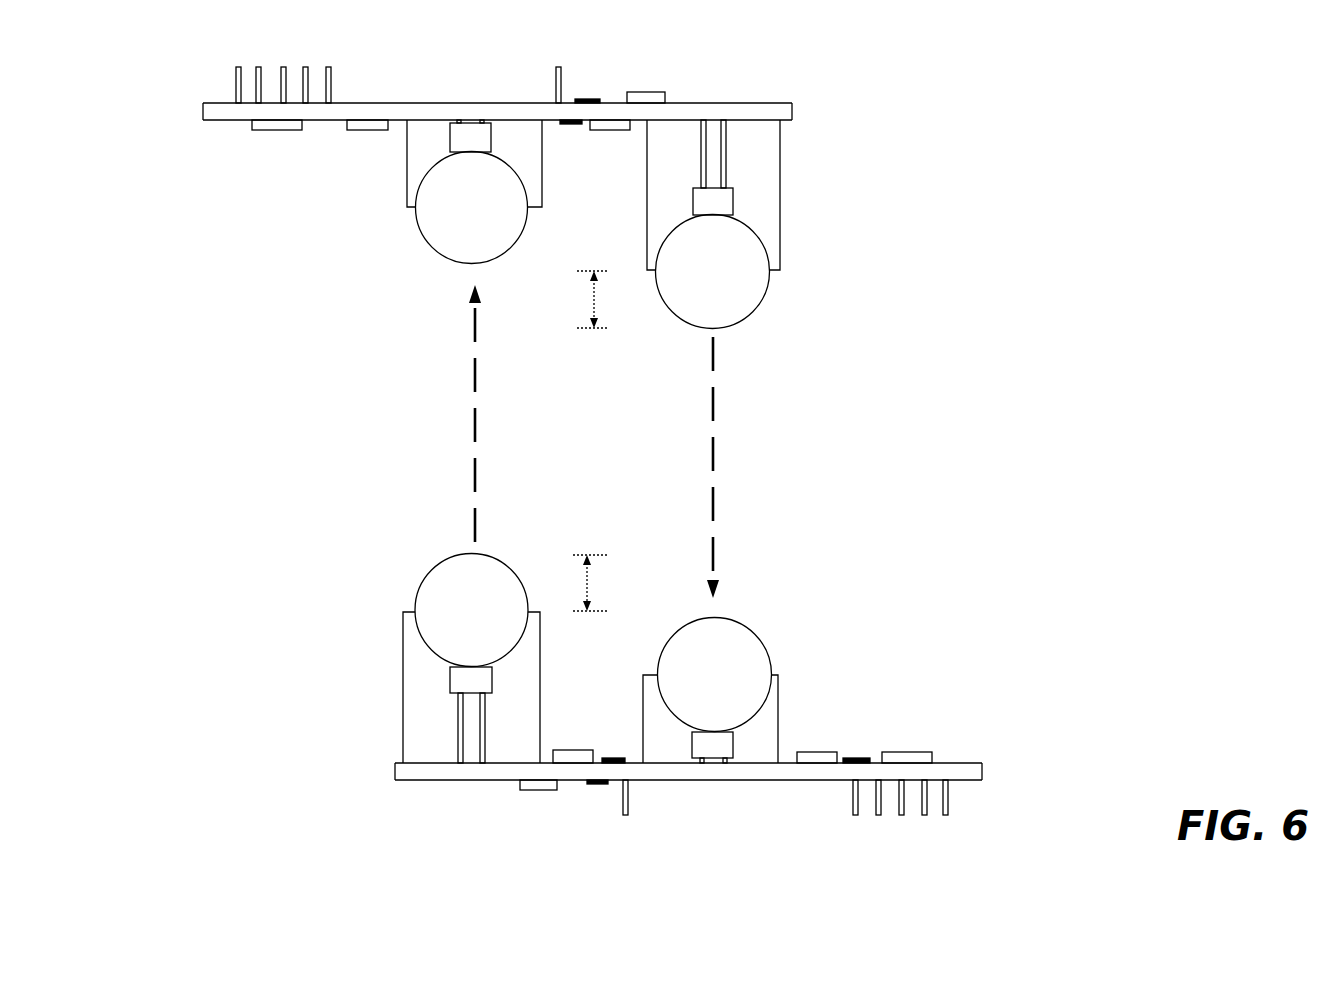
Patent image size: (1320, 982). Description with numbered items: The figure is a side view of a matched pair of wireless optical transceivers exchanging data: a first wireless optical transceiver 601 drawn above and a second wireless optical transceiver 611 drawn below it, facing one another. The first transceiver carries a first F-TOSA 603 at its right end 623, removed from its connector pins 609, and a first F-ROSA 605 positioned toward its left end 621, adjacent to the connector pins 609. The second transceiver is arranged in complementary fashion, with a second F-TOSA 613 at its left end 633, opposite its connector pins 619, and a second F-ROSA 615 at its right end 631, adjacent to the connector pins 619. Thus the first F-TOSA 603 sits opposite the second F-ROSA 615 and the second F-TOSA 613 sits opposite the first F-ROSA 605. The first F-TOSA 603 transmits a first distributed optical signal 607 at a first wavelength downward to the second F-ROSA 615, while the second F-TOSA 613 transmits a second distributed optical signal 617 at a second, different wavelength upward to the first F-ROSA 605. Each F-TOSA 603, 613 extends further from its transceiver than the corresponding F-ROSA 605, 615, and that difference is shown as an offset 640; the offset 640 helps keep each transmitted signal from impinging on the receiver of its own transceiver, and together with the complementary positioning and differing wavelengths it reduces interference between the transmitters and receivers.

The first wireless optical transceiver 601 is at (918, 109).
The first F-TOSA 603 is at (658, 345).
The first F-ROSA 605 is at (435, 278).
The first distributed optical signal 607 is at (713, 422).
The connector pins 609 is at (258, 67).
The second wireless optical transceiver 611 is at (904, 537).
The second F-TOSA 613 is at (396, 558).
The second F-ROSA 615 is at (750, 601).
The second distributed optical signal 617 is at (475, 437).
The connector pins 619 is at (878, 815).
The left end 621 is at (203, 108).
The right end 623 is at (792, 108).
The right end 631 is at (982, 768).
The left end 633 is at (395, 768).
The offset 640 is at (594, 297).